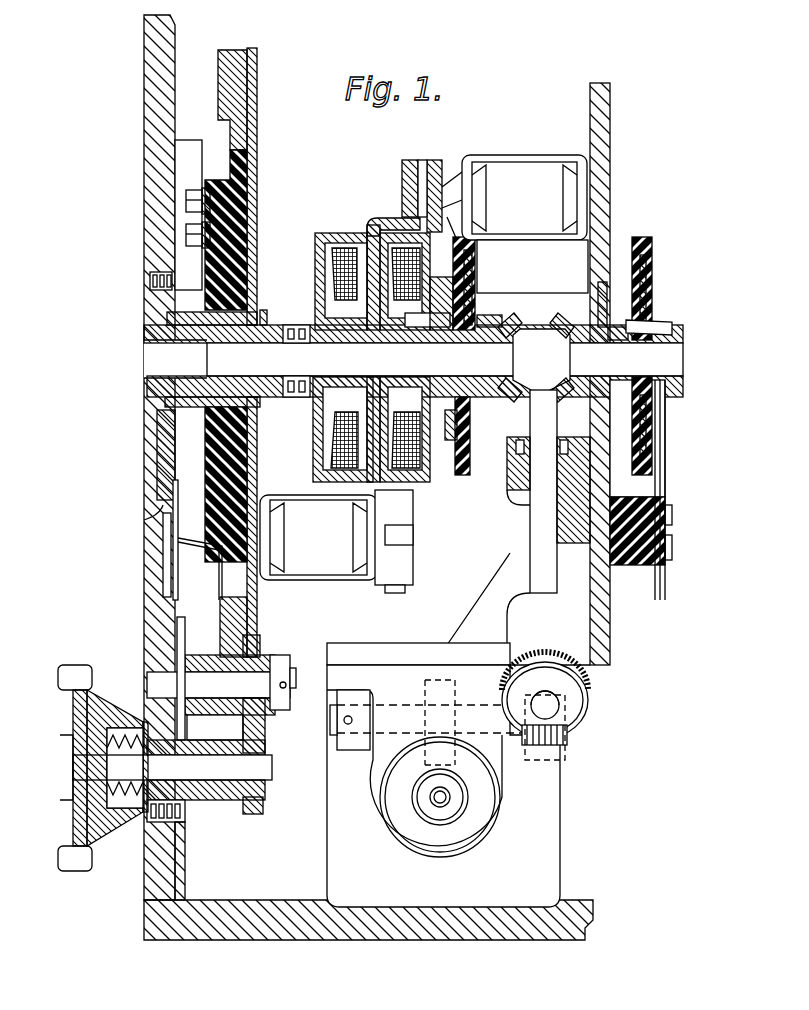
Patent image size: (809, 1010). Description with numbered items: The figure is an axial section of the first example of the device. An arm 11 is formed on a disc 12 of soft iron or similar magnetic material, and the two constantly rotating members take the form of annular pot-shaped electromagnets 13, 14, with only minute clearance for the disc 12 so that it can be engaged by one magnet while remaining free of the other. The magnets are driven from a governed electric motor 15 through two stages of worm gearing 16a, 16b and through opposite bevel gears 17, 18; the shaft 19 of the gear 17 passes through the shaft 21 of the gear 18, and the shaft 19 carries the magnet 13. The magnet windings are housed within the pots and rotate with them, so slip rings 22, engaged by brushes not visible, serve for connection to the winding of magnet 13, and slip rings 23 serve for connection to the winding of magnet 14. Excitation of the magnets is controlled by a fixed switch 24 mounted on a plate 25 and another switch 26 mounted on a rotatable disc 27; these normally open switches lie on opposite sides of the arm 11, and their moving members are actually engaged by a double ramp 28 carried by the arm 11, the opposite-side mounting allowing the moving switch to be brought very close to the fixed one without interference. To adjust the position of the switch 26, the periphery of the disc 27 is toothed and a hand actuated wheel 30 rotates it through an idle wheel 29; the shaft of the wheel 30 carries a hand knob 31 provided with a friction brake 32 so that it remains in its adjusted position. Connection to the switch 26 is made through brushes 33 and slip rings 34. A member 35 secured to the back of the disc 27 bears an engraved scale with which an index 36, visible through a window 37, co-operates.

The arm 11 is at (418, 187).
The disc 12 is at (372, 232).
The electromagnet 13 is at (338, 283).
The electromagnet 14 is at (412, 278).
The electric motor 15 is at (540, 848).
The worm gearing 16a is at (455, 757).
The worm gearing 16b is at (556, 708).
The bevel gear 17 is at (555, 330).
The bevel gear 18 is at (520, 330).
The shaft 19 is at (578, 355).
The shaft 21 is at (488, 325).
The slip rings 22 is at (648, 270).
The slip rings 23 is at (470, 445).
The fixed switch 24 is at (528, 168).
The plate 25 is at (590, 118).
The switch 26 is at (338, 570).
The rotatable disc 27 is at (257, 612).
The double ramp 28 is at (409, 172).
The idle wheel 29 is at (261, 648).
The hand actuated wheel 30 is at (255, 812).
The hand knob 31 is at (108, 712).
The friction brake 32 is at (108, 812).
The brushes 33 is at (205, 202).
The slip rings 34 is at (205, 240).
The member 35 is at (221, 612).
The index 36 is at (212, 548).
The window 37 is at (163, 556).